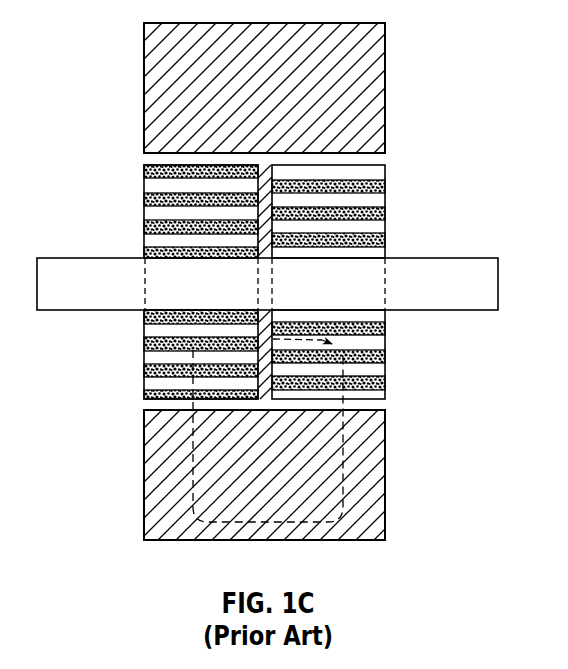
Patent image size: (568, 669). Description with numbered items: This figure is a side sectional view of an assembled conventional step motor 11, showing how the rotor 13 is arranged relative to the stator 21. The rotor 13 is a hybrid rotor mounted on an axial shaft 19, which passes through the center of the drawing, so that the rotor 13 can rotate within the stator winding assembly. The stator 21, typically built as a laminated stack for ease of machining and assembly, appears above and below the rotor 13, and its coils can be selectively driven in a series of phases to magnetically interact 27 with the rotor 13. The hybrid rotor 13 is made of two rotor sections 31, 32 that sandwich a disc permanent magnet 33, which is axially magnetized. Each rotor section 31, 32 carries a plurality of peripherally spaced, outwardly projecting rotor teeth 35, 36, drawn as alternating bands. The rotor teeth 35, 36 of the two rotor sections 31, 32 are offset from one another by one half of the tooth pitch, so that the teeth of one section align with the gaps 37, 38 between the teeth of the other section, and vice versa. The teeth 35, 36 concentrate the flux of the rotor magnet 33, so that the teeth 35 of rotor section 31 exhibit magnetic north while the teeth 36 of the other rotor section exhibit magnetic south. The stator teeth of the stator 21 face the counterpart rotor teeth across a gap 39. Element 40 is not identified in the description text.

The step motor 11 is at (93, 46).
The rotor 13 is at (232, 181).
The axial shaft 19 is at (45, 311).
The stator 21 is at (144, 493).
The magnetic interaction 27 is at (344, 447).
The rotor section 31 is at (168, 181).
The rotor section 32 is at (362, 186).
The disc permanent magnet 33 is at (262, 165).
The rotor teeth 35 is at (144, 227).
The rotor teeth 36 is at (385, 240).
The gaps between rotor teeth 37 is at (144, 326).
The gaps between rotor teeth 38 is at (385, 338).
The gap 39 is at (257, 386).
The lower spacer 40 is at (264, 400).